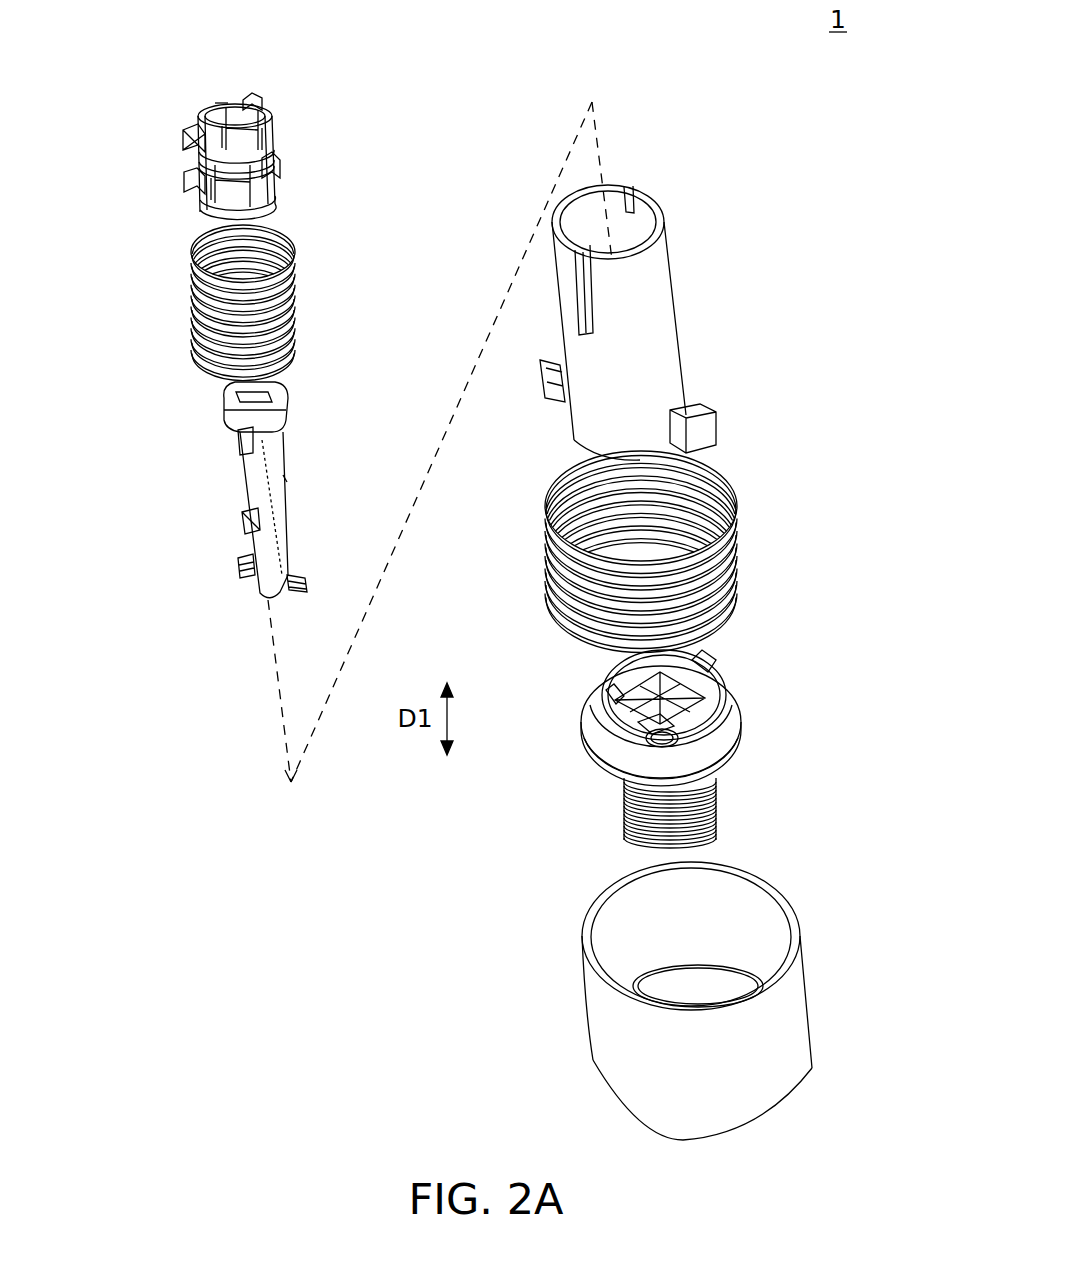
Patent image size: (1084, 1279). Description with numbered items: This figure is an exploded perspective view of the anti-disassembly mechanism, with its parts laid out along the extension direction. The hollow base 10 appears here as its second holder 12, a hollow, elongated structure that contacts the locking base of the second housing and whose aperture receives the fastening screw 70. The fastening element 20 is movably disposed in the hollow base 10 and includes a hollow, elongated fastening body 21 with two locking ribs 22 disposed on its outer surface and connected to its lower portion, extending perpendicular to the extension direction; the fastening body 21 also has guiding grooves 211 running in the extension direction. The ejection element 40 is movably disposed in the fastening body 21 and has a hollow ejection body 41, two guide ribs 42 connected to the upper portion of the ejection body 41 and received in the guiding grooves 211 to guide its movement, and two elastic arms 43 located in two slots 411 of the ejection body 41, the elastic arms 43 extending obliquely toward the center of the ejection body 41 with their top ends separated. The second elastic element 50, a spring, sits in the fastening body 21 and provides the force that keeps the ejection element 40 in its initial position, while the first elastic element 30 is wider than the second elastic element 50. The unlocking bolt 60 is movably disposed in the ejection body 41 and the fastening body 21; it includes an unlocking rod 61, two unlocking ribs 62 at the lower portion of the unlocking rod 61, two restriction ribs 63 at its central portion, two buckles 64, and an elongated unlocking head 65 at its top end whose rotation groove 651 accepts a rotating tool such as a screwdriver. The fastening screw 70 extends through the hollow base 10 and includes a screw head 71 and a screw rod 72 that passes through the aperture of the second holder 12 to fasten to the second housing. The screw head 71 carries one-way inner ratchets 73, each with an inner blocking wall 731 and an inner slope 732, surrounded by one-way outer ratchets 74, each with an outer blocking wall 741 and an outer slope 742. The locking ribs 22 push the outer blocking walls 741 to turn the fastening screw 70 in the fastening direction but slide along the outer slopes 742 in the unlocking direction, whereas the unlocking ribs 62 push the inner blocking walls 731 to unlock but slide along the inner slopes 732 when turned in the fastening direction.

The hollow base 10 is at (757, 1001).
The second holder 12 is at (805, 980).
The fastening element 20 is at (656, 311).
The fastening body 21 is at (656, 309).
The guiding grooves 211 is at (633, 220).
The locking ribs 22 is at (705, 428).
The first elastic element 30 is at (745, 577).
The ejection element 40 is at (255, 126).
The ejection body 41 is at (215, 103).
The slots 411 is at (263, 137).
The guide ribs 42 is at (260, 100).
The elastic arms 43 is at (200, 132).
The second elastic element 50 is at (185, 325).
The unlocking bolt 60 is at (236, 522).
The unlocking rod 61 is at (240, 490).
The unlocking ribs 62 is at (310, 593).
The restriction ribs 63 is at (287, 480).
The buckles 64 is at (235, 430).
The unlocking head 65 is at (315, 390).
The rotation groove 651 is at (263, 403).
The fastening screw 70 is at (666, 757).
The screw head 71 is at (723, 745).
The screw rod 72 is at (717, 810).
The one-way inner ratchets 73 is at (664, 721).
The inner blocking wall 731 is at (605, 702).
The inner slope 732 is at (653, 690).
The one-way outer ratchets 74 is at (580, 821).
The outer blocking wall 741 is at (620, 733).
The outer slope 742 is at (663, 740).